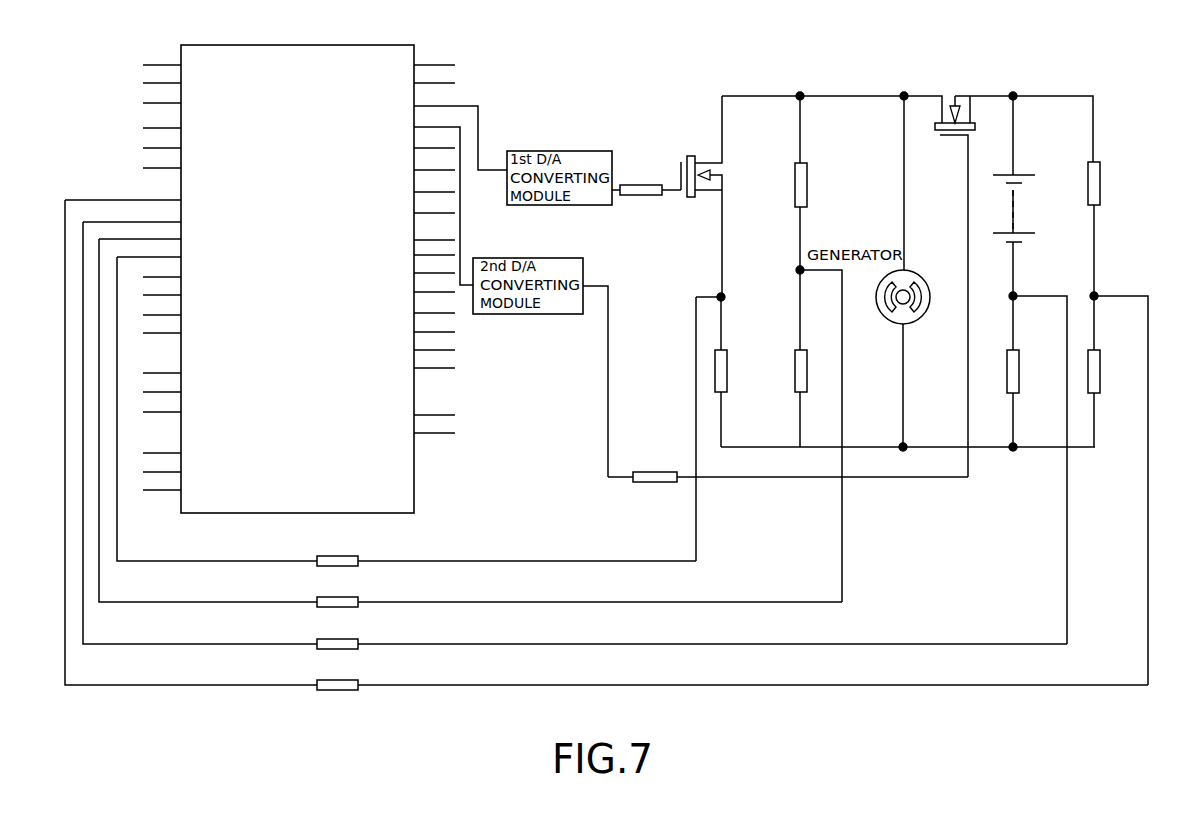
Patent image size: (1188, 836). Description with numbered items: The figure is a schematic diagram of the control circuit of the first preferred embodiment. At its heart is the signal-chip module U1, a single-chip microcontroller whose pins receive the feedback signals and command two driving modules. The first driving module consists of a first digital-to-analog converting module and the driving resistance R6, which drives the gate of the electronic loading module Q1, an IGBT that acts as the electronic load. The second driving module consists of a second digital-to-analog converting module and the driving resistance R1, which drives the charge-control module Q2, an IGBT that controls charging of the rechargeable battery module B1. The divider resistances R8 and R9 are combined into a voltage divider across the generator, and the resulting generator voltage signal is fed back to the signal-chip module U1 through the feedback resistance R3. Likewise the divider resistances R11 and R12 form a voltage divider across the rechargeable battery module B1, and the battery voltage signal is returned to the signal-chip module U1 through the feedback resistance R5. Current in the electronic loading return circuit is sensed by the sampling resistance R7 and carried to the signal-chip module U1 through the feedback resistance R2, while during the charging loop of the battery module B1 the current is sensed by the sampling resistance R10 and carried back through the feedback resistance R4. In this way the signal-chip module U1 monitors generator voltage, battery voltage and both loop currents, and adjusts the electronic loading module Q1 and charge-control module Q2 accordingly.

The signal-chip module U1 is at (299, 265).
The electronic loading module Q1 is at (717, 196).
The charge-control module Q2 is at (946, 262).
The driving resistance for the second driving module R1 is at (788, 465).
The feedback resistance R2 is at (406, 411).
The feedback resistance R3 is at (470, 423).
The feedback resistance R4 is at (575, 435).
The feedback resistance R5 is at (606, 445).
The driving resistance for the first driving module R6 is at (650, 179).
The sampling resistance R7 is at (736, 372).
The divider resistance R8 is at (816, 358).
The divider resistance R9 is at (816, 183).
The sampling resistance R10 is at (1035, 371).
The divider resistance R11 is at (1115, 228).
The divider resistance R12 is at (1114, 371).
The rechargeable battery module B1 is at (1027, 196).